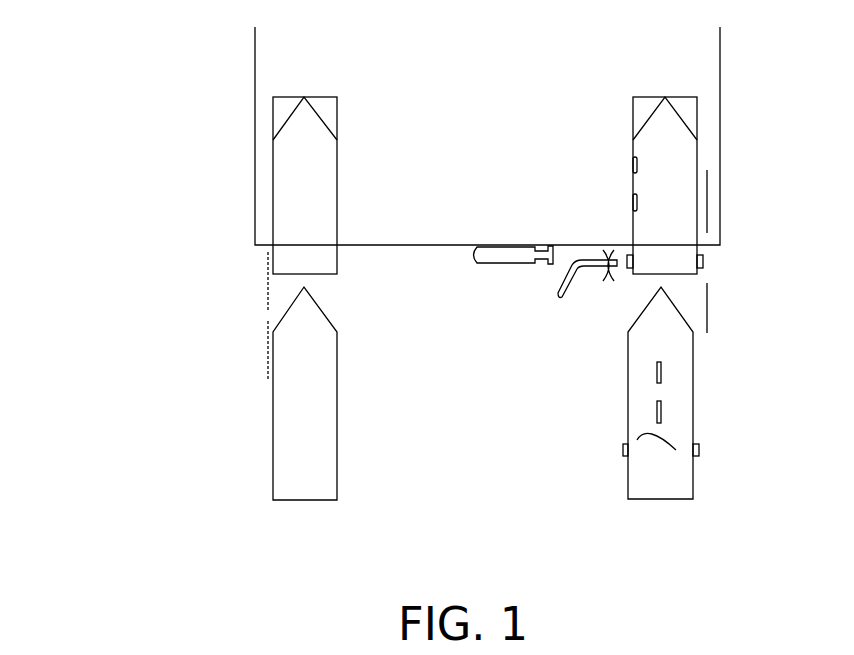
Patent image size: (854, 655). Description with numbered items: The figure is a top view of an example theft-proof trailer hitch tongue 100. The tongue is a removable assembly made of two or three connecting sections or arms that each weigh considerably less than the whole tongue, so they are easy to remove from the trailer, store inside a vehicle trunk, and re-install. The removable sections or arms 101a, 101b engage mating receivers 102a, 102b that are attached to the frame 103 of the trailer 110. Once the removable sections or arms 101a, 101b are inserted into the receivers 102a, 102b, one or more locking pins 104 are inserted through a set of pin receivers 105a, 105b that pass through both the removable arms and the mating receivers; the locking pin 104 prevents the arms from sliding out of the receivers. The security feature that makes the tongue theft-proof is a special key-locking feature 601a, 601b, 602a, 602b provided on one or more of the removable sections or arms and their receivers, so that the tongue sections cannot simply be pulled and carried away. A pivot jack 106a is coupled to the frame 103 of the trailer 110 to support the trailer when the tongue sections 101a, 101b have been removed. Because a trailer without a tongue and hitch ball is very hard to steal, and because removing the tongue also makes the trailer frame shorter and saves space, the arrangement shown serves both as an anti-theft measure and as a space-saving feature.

The theft-proof trailer hitch tongue 100 is at (168, 56).
The frame 103 is at (255, 54).
The trailer 110 is at (386, 245).
The mating receiver 102a is at (328, 118).
The mating receiver 102b is at (638, 117).
The key-locking feature 602a is at (633, 165).
The key-locking feature 602b is at (633, 203).
The pin receiver 105a is at (703, 262).
The pivot jack 106a is at (493, 266).
The locking pin 104 is at (574, 277).
The removable section or arm 101a is at (337, 365).
The removable section or arm 101b is at (682, 348).
The key-locking feature 601a is at (657, 372).
The key-locking feature 601b is at (657, 410).
The pin receiver 105b is at (699, 450).